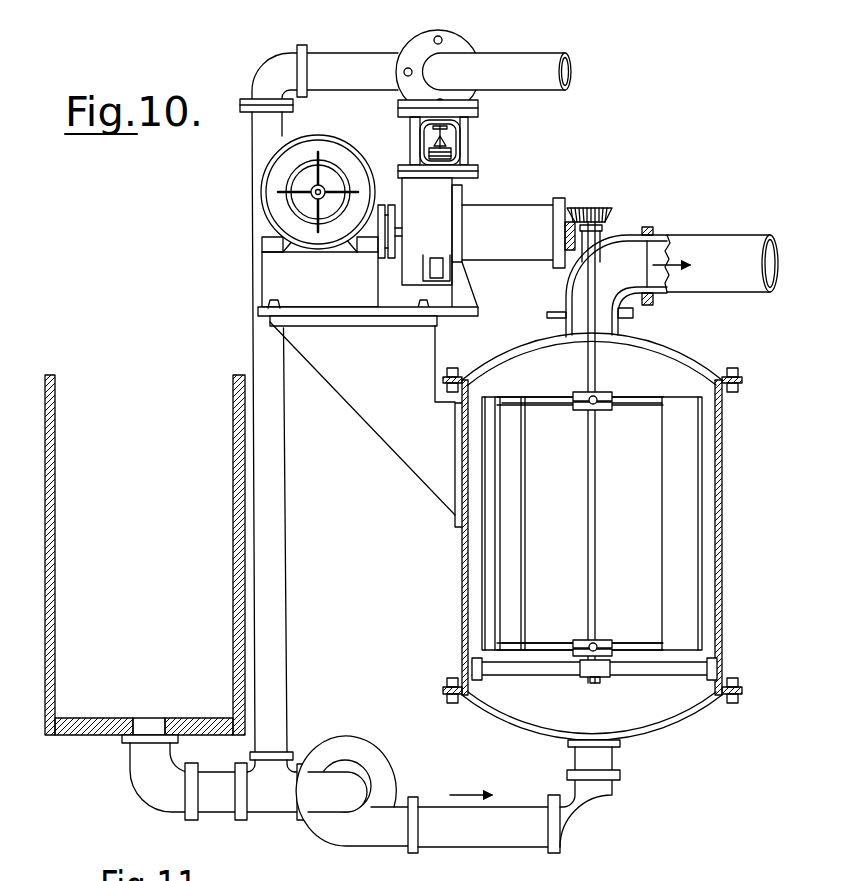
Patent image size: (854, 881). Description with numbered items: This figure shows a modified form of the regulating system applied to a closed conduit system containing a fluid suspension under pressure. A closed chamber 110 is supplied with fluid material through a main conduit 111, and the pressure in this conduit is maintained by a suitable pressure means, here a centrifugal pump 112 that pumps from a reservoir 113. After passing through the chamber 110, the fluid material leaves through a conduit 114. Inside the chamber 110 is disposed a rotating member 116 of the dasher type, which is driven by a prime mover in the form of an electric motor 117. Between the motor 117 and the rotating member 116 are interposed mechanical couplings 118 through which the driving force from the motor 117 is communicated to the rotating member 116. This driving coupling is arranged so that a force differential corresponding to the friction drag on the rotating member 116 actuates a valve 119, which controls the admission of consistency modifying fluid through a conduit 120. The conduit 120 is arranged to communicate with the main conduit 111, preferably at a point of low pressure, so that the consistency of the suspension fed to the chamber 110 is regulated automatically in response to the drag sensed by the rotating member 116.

The closed chamber 110 is at (722, 541).
The main conduit 111 is at (488, 840).
The centrifugal pump 112 is at (338, 738).
The reservoir 113 is at (244, 633).
The conduit 114 is at (722, 237).
The rotating member 116 is at (634, 384).
The electric motor 117 is at (262, 190).
The mechanical couplings 118 is at (463, 193).
The valve 119 is at (466, 38).
The conduit 120 is at (287, 537).